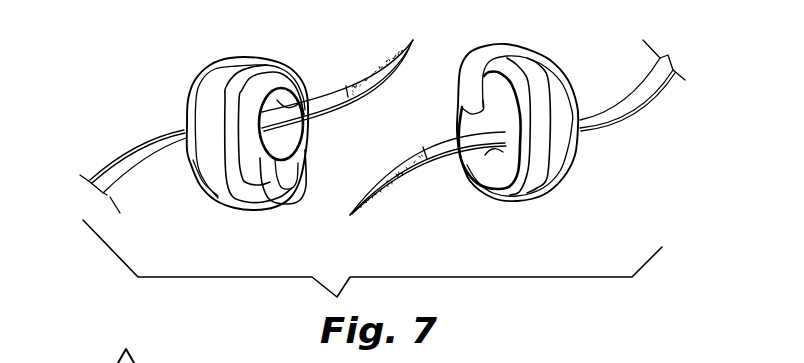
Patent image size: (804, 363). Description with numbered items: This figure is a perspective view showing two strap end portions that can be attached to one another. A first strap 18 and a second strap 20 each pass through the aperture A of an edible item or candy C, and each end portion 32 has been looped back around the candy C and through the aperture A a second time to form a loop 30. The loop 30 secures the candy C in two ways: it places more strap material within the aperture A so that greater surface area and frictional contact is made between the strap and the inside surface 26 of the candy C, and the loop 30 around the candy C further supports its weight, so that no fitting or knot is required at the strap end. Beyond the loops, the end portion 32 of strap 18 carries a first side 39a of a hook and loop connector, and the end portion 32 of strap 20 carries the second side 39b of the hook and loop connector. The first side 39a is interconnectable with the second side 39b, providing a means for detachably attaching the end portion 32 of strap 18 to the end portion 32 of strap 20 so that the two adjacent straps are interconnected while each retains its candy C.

The strap 18 is at (103, 155).
The strap 20 is at (653, 107).
The inside surface 26 is at (292, 102).
The loop 30 is at (217, 205).
The end portion 32 is at (170, 112).
The first side of hook and loop connector 39a is at (367, 72).
The second side of hook and loop connector 39b is at (393, 170).
The aperture A is at (287, 134).
The edible item or candy C is at (238, 58).